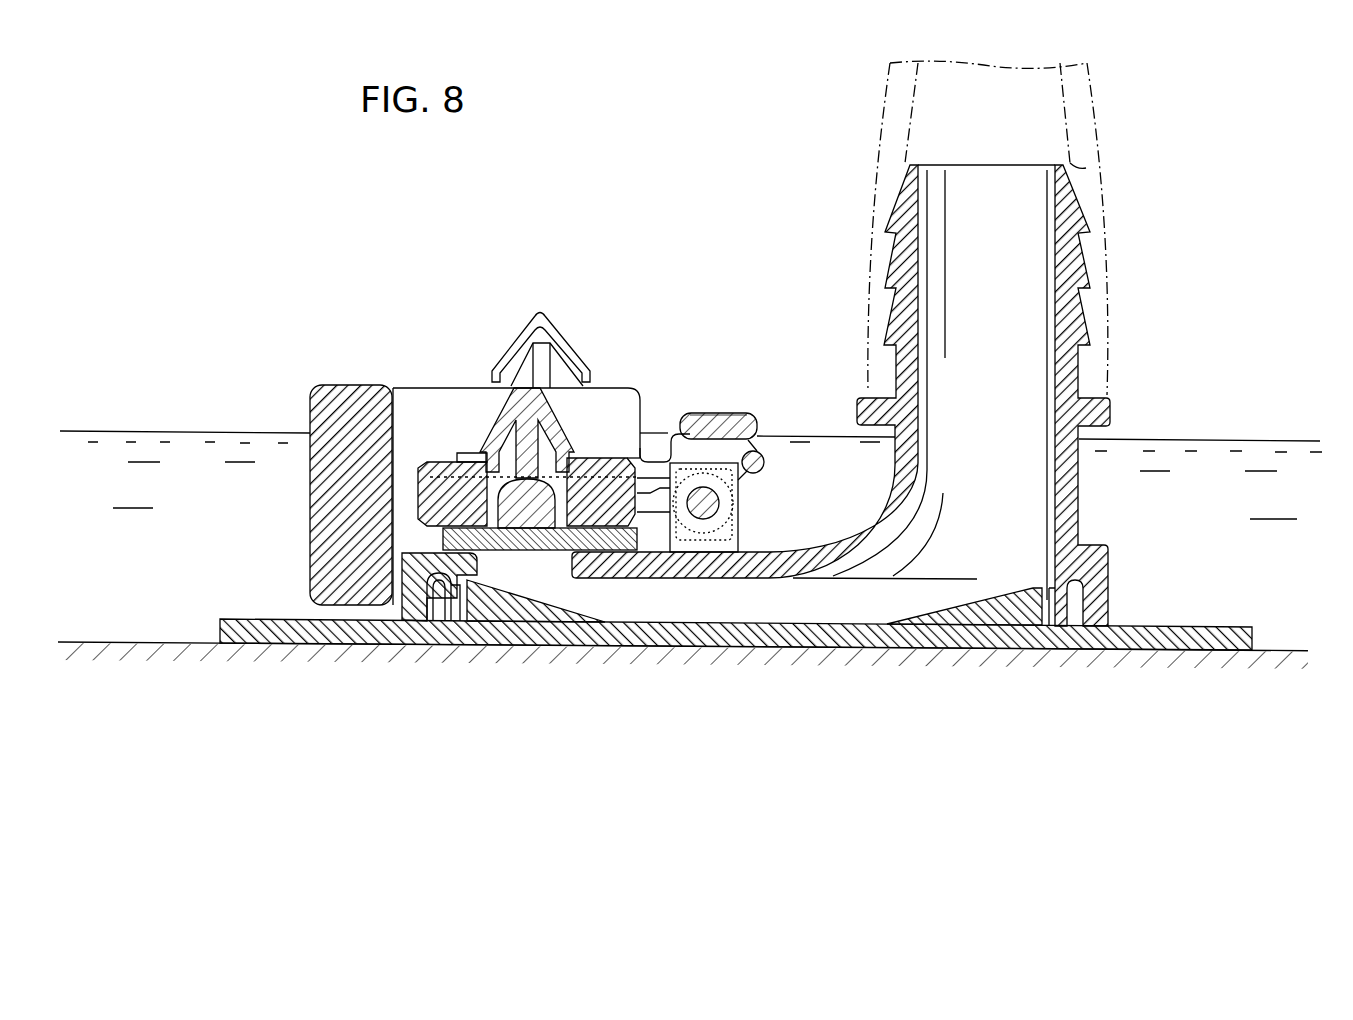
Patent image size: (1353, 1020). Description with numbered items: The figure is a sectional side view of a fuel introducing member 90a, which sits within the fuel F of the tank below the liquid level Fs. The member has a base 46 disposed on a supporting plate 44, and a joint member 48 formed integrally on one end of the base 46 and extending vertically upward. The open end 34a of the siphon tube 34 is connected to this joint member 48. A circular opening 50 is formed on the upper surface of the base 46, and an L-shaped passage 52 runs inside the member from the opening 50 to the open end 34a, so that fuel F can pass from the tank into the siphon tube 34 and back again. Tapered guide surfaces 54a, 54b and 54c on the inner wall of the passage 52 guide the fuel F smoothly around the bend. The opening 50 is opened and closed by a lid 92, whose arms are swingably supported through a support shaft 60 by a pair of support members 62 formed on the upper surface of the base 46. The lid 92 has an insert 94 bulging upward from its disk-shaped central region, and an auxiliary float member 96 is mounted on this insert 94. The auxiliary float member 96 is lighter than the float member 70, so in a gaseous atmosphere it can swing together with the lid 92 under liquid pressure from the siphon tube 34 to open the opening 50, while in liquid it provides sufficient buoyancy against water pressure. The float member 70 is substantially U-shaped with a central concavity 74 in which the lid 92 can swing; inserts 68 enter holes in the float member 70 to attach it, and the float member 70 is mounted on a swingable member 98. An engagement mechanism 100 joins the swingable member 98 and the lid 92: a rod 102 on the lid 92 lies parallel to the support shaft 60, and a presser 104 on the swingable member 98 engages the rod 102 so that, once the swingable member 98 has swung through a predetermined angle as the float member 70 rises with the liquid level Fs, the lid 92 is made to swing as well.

The siphon tube 34 is at (1097, 113).
The open end 34a is at (1090, 168).
The supporting plate 44 is at (1160, 626).
The base 46 is at (398, 602).
The joint member 48 is at (1070, 372).
The circular opening 50 is at (487, 570).
The L-shaped passage 52 is at (1005, 475).
The tapered guide surface 54a is at (537, 585).
The tapered guide surface 54b is at (950, 597).
The tapered guide surface 54c is at (885, 528).
The support shaft 60 is at (720, 505).
The support members 62 is at (716, 542).
The insert 68 is at (540, 318).
The float member 70 is at (372, 435).
The concavity 74 is at (394, 405).
The fuel introducing member 90a is at (581, 234).
The lid 92 is at (438, 539).
The insert 94 is at (515, 410).
The auxiliary float member 96 is at (442, 490).
The swingable member 98 is at (648, 457).
The engagement mechanism 100 is at (768, 354).
The rod 102 is at (740, 414).
The presser 104 is at (704, 413).
The fuel F is at (104, 447).
The liquid level Fs is at (188, 431).